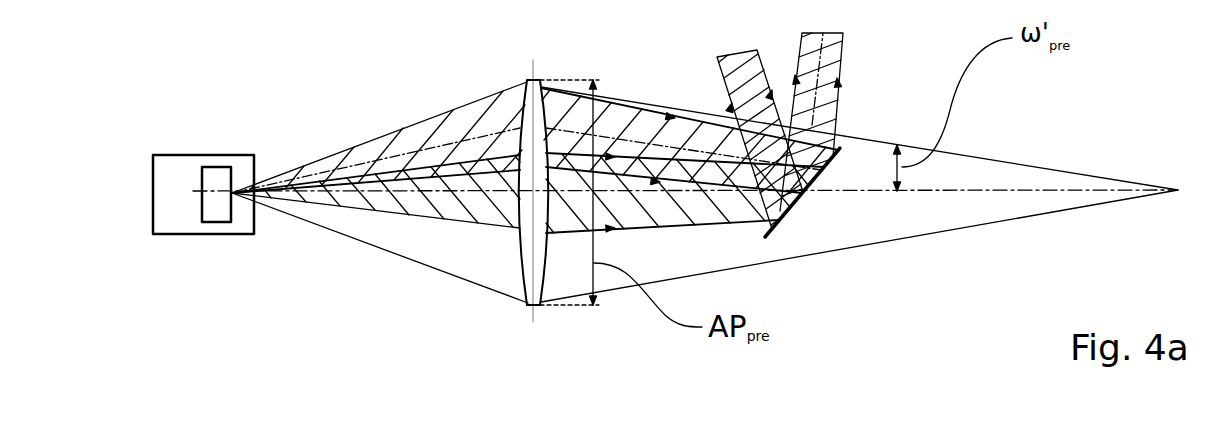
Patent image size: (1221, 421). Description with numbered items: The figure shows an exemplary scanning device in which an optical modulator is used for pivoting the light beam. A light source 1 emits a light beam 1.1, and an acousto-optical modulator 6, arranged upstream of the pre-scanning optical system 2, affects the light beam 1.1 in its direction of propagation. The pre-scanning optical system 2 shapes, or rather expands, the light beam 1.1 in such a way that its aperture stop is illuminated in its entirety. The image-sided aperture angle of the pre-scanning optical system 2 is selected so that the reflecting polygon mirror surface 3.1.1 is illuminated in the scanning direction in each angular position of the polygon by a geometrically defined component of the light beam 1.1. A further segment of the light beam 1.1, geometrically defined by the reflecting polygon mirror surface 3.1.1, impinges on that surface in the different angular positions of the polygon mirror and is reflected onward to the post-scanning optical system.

The acousto-optical modulator 6 is at (183, 180).
The light source 1 is at (218, 178).
The light beam 1.1 is at (417, 262).
The pre-scanning optical system 2 is at (523, 107).
The reflecting polygon mirror surface 3.1.1 is at (805, 172).